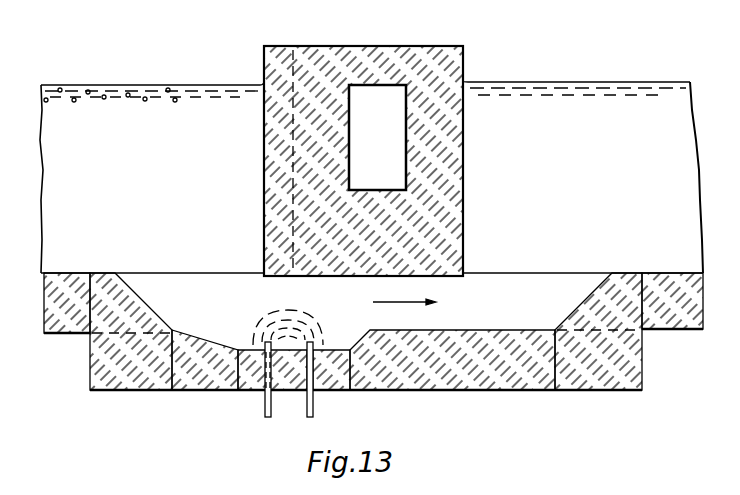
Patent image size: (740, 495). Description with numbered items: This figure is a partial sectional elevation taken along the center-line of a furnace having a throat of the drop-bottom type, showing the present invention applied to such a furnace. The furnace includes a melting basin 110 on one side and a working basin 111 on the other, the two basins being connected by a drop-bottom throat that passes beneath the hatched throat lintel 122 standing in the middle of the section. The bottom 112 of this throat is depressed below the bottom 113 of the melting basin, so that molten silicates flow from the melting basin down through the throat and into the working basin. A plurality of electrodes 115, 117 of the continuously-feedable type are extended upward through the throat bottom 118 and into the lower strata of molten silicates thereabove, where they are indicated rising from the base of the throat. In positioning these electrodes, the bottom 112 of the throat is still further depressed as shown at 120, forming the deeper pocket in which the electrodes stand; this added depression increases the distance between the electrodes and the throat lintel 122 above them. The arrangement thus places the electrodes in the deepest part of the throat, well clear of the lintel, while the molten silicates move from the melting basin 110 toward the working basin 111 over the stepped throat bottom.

The melting basin 110 is at (131, 112).
The working basin 111 is at (552, 112).
The throat bottom 112 is at (470, 332).
The melting basin bottom 113 is at (64, 276).
The electrode 115 is at (268, 418).
The electrode 117 is at (311, 418).
The throat bottom 118 is at (333, 374).
The further depressed portion of throat bottom 120 is at (240, 348).
The throat lintel 122 is at (271, 279).